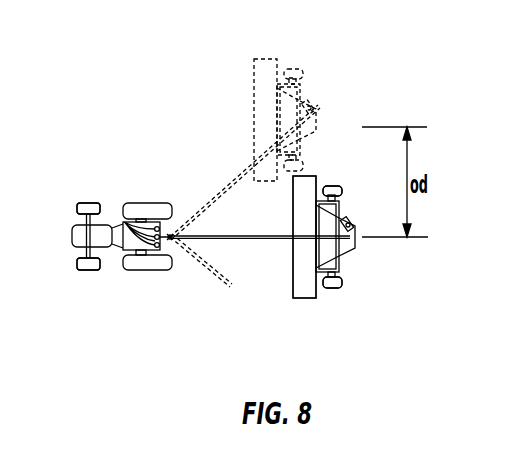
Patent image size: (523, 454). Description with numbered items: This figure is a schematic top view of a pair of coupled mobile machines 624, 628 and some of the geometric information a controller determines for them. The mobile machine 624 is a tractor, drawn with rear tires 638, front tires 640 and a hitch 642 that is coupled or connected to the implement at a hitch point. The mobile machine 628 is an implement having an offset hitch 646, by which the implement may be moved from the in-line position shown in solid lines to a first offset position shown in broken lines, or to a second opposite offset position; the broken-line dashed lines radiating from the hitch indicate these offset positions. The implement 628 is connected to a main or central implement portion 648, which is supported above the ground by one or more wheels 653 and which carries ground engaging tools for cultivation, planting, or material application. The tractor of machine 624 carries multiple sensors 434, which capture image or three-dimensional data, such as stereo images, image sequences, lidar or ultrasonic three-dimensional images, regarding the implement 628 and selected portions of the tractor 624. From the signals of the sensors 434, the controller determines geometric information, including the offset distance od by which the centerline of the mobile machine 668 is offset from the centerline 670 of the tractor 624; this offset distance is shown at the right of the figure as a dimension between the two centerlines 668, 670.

The mobile machine 624 is at (132, 185).
The sensors 434 is at (124, 222).
The offset hitch 646 is at (184, 223).
The hitch 642 is at (172, 242).
The front tires 640 is at (88, 270).
The rear tires 638 is at (140, 270).
The central implement portion 648 is at (305, 298).
The wheels 653 is at (336, 288).
The mobile machine 628 is at (376, 147).
The centerline of the mobile machine 668 is at (414, 126).
The centerline 670 is at (398, 239).